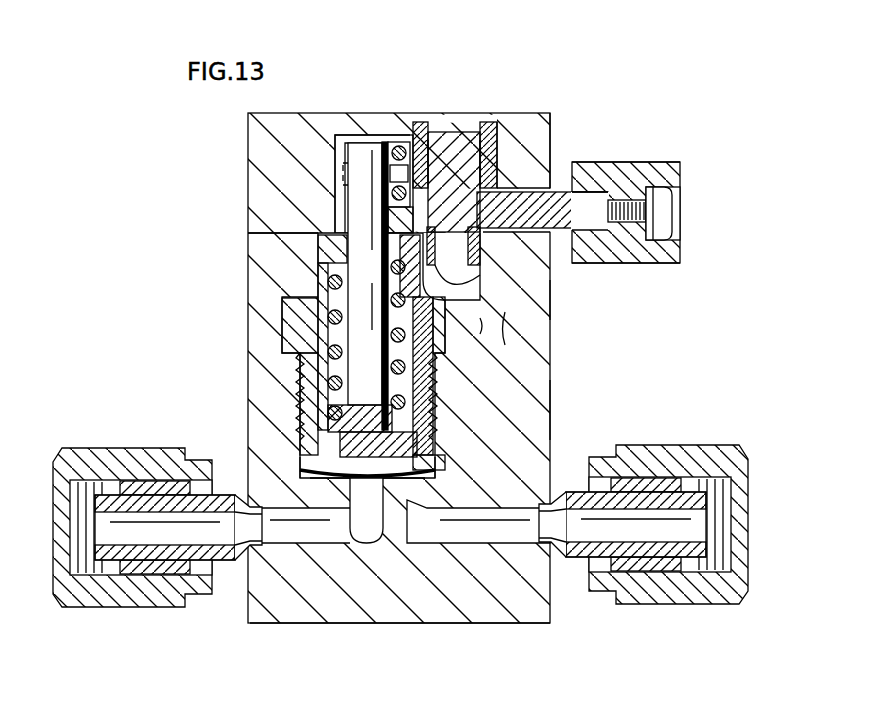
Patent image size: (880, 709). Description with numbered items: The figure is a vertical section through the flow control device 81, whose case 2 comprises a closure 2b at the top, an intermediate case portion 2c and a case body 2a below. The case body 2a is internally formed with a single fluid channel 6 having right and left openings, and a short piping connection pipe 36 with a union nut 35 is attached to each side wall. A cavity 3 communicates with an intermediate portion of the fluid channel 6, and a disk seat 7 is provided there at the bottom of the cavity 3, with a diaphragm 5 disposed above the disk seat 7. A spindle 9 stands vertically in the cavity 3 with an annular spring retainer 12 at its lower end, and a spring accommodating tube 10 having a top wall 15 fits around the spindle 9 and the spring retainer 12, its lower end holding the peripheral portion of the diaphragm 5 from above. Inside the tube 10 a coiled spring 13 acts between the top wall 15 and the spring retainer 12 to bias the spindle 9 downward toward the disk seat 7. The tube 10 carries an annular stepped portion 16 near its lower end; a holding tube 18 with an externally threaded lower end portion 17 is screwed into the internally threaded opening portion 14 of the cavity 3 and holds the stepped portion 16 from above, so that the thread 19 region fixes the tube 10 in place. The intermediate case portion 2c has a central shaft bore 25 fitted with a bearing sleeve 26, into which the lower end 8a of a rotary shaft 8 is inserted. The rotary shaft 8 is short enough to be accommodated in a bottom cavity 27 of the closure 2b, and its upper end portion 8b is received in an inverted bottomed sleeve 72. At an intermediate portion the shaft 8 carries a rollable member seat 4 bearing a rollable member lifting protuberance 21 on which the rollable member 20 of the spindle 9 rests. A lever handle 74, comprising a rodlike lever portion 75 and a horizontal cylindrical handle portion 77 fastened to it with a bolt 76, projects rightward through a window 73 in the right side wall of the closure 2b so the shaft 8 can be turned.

The case 2 is at (548, 334).
The case body 2a is at (547, 407).
The closure 2b is at (528, 120).
The intermediate case portion 2c is at (543, 300).
The cavity 3 is at (435, 455).
The rollable member seat 4 is at (380, 224).
The diaphragm 5 is at (298, 490).
The fluid channel 6 is at (450, 528).
The disk seat 7 is at (390, 498).
The rotary shaft 8 is at (432, 130).
The lower end 8a is at (472, 262).
The upper end portion 8b is at (455, 138).
The spindle 9 is at (348, 190).
The spring accommodating tube 10 is at (300, 278).
The annular spring retainer 12 is at (305, 450).
The coiled spring 13 is at (295, 318).
The internally threaded opening portion 14 is at (297, 388).
The top wall 15 is at (323, 247).
The annular stepped portion 16 is at (428, 432).
The externally threaded lower end portion 17 is at (443, 380).
The holding tube 18 is at (480, 328).
The thread 19 is at (293, 363).
The rollable member 20 is at (392, 150).
The rollable member lifting protuberance 21 is at (362, 207).
The shaft bore 25 is at (505, 312).
The bearing sleeve 26 is at (630, 260).
The bottom cavity 27 is at (340, 142).
The union nut 35 is at (130, 607).
The piping connection pipe 36 is at (226, 574).
The sleeve 72 is at (487, 125).
The window 73 is at (560, 193).
The lever handle 74 is at (678, 161).
The lever portion 75 is at (583, 210).
The bolt 76 is at (648, 208).
The handle portion 77 is at (627, 162).
The flow control device 81 is at (502, 628).